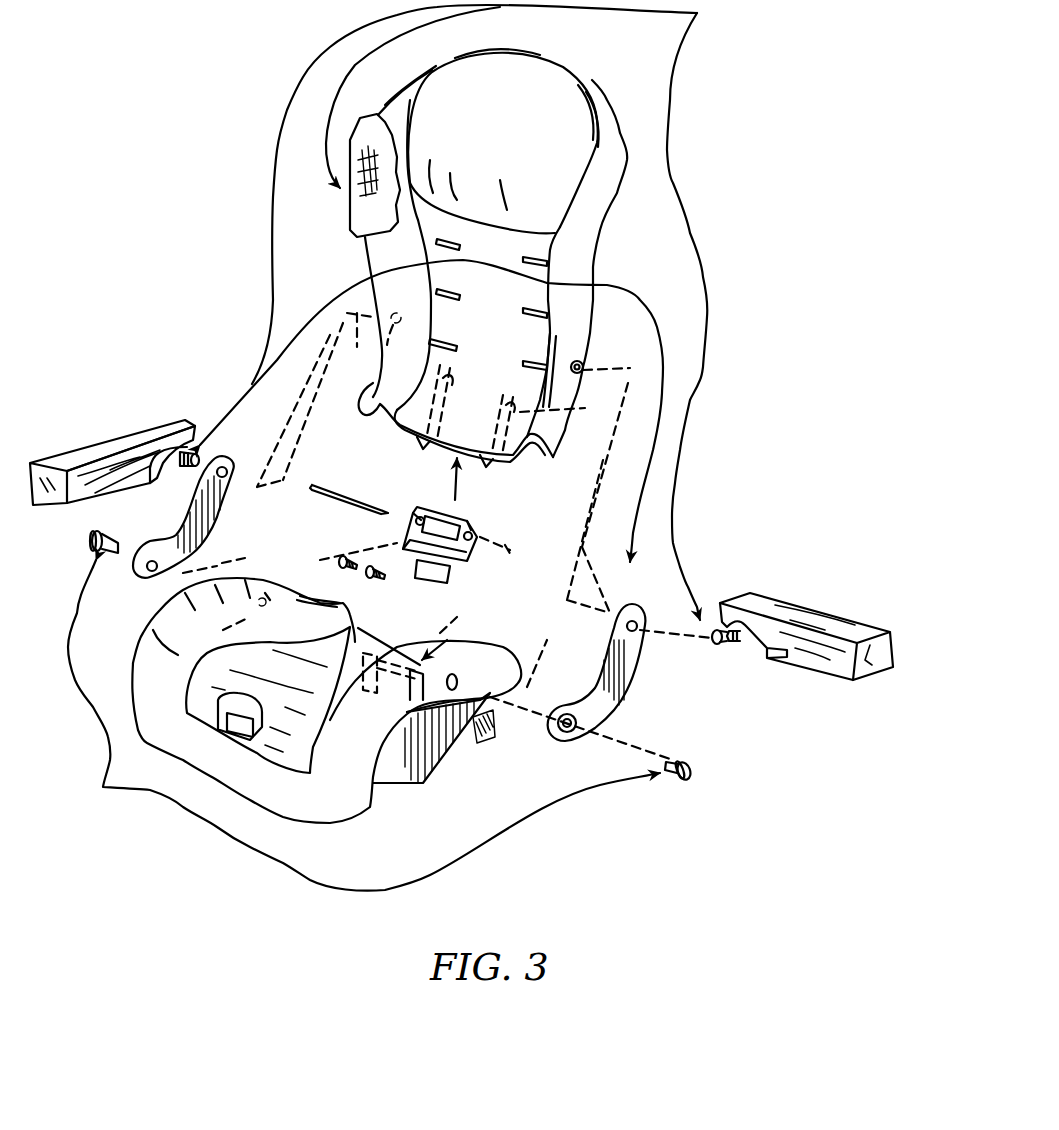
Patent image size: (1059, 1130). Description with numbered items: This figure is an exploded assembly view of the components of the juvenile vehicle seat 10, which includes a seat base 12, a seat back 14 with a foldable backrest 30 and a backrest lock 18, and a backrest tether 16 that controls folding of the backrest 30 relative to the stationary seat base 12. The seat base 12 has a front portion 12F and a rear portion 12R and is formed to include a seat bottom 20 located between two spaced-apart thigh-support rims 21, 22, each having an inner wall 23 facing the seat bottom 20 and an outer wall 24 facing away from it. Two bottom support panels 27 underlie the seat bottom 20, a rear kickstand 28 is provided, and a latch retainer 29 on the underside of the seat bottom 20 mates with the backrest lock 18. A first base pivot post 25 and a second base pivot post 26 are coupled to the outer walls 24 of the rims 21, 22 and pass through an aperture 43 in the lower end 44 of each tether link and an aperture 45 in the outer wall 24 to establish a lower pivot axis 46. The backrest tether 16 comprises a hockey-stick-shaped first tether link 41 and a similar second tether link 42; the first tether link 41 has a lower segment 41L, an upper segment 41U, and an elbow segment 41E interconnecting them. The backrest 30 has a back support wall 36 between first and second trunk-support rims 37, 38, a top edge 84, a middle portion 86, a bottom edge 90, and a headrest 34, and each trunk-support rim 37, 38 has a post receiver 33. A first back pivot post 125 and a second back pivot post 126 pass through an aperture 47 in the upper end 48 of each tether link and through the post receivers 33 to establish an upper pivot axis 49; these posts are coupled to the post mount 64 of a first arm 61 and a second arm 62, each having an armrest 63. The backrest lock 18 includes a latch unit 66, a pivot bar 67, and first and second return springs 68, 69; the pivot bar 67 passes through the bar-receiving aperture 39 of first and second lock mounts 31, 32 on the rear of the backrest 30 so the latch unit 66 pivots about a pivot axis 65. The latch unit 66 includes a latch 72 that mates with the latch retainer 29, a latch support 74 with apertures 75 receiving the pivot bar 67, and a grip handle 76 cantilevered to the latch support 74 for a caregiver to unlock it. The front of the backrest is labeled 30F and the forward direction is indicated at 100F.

The juvenile vehicle seat 10 is at (720, 118).
The seat base 12 is at (292, 713).
The front portion 12F is at (273, 785).
The rear portion 12R is at (355, 642).
The seat back 14 is at (697, 13).
The backrest tether 16 is at (560, 284).
The backrest lock 18 is at (497, 527).
The seat bottom 20 is at (313, 684).
The first thigh-support rim 21 is at (360, 740).
The second thigh-support rim 22 is at (150, 667).
The inner wall 23 is at (248, 556).
The outer wall 24 is at (497, 646).
The first base pivot post 25 is at (686, 763).
The second base pivot post 26 is at (108, 530).
The bottom support panels 27 is at (425, 785).
The rear kickstand 28 is at (487, 742).
The latch retainer 29 is at (459, 612).
The foldable backrest 30 is at (505, 245).
The front of seat back 30F is at (512, 376).
The first lock mount 31 is at (485, 462).
The second lock mount 32 is at (412, 443).
The post receiver 33 is at (583, 366).
The headrest 34 is at (523, 82).
The back support wall 36 is at (505, 332).
The first trunk-support rim 37 is at (577, 318).
The second trunk-support rim 38 is at (355, 242).
The bar-receiving aperture 39 is at (445, 380).
The first tether link 41 is at (632, 707).
The upper segment 41U is at (623, 667).
The lower segment 41L is at (587, 700).
The elbow segment 41E is at (612, 709).
The second tether link 42 is at (218, 537).
The aperture 43 is at (144, 562).
The lower end 44 is at (135, 577).
The aperture 45 is at (475, 667).
The lower pivot axis 46 is at (369, 616).
The aperture 47 is at (226, 478).
The upper end 48 is at (225, 476).
The upper pivot axis 49 is at (615, 377).
The first arm 61 is at (842, 598).
The second arm 62 is at (98, 428).
The armrest 63 is at (50, 448).
The post mount 64 is at (182, 437).
The pivot axis 65 is at (512, 560).
The latch unit 66 is at (415, 497).
The pivot bar 67 is at (343, 490).
The first return spring 68 is at (378, 583).
The second return spring 69 is at (340, 561).
The latch 72 is at (403, 553).
The latch support 74 is at (475, 565).
The apertures 75 is at (421, 513).
The grip handle 76 is at (430, 585).
The top edge 84 is at (573, 103).
The middle portion 86 is at (470, 225).
The bottom edge 90 is at (365, 392).
The forward direction 100F is at (175, 298).
The first back pivot post 125 is at (718, 648).
The second back pivot post 126 is at (186, 468).